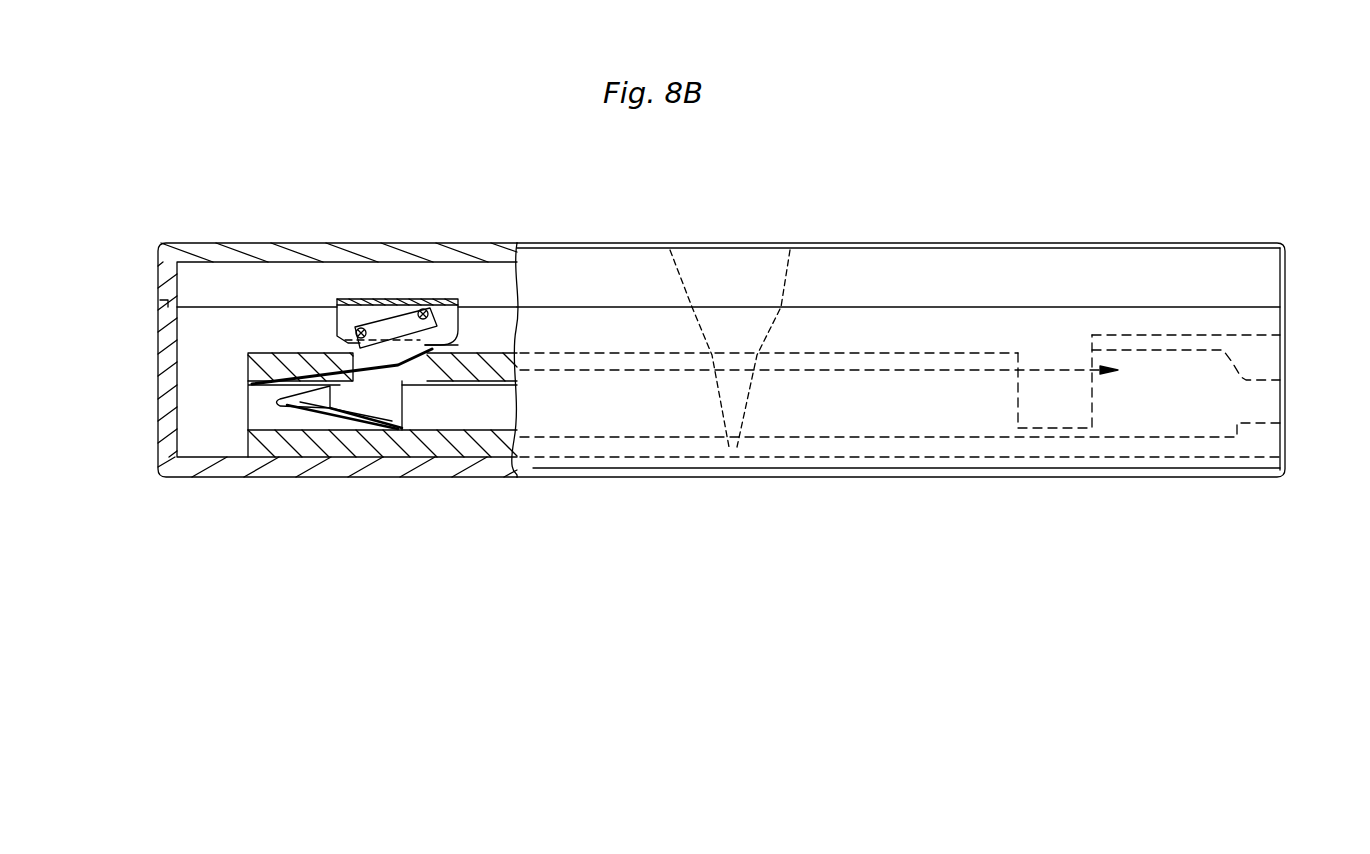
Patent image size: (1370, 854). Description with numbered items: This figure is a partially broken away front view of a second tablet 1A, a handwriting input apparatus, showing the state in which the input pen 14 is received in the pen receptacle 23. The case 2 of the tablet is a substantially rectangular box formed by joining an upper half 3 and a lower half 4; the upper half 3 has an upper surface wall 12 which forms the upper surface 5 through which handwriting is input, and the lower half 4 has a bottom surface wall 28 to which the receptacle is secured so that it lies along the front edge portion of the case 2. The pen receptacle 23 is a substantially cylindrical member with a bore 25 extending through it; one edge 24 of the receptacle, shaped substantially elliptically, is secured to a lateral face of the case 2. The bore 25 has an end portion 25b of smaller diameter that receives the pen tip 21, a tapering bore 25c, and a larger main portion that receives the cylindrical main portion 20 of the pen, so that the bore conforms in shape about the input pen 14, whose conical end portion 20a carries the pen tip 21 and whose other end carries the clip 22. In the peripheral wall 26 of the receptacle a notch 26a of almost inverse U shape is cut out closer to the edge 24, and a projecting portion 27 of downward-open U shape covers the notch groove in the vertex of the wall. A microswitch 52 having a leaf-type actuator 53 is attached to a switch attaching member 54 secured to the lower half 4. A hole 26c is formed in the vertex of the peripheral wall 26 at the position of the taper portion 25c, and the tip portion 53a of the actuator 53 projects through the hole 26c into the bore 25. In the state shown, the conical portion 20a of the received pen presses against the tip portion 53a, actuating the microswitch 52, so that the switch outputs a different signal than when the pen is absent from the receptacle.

The second tablet 1A is at (1100, 228).
The case 2 is at (1330, 310).
The upper half 3 is at (1271, 280).
The lower half 4 is at (1271, 320).
The upper surface 5 is at (757, 243).
The upper surface wall 12 is at (315, 250).
The input pen 14 is at (457, 455).
The main portion 20 is at (506, 418).
The end portion 20a is at (335, 430).
The pen tip 21 is at (288, 410).
The clip 22 is at (1072, 356).
The pen receptacle 23 is at (275, 352).
The edge 24 is at (1270, 352).
The bore 25 is at (511, 372).
The end portion of bore 25b is at (248, 400).
The tapering bore 25c is at (367, 445).
The peripheral wall 26 is at (505, 354).
The notch 26a is at (1018, 386).
The hole 26c is at (452, 343).
The projecting portion 27 is at (1175, 333).
The bottom surface wall 28 is at (224, 472).
The microswitch 52 is at (392, 322).
The actuator 53 is at (428, 372).
The tip portion 53a is at (402, 378).
The switch attaching member 54 is at (452, 298).